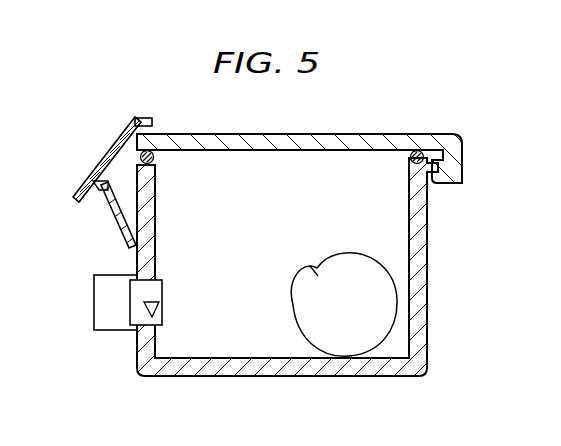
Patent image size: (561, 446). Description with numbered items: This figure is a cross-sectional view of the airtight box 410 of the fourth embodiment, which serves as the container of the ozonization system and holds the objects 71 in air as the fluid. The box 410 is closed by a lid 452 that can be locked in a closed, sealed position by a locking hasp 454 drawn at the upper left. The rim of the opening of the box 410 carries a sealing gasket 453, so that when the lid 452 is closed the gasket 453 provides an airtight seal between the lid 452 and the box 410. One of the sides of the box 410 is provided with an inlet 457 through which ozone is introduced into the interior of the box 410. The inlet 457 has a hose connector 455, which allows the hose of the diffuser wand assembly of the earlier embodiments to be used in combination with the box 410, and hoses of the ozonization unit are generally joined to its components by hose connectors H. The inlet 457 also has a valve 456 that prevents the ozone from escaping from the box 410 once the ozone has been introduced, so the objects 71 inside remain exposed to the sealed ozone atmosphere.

The box 410 is at (443, 258).
The lid 452 is at (288, 134).
The sealing gasket 453 is at (150, 151).
The locking hasp 454 is at (115, 221).
The hose connector 455 is at (93, 313).
The valve 456 is at (162, 300).
The inlet 457 is at (146, 303).
The hose connectors H is at (103, 331).
The objects 71 is at (390, 303).